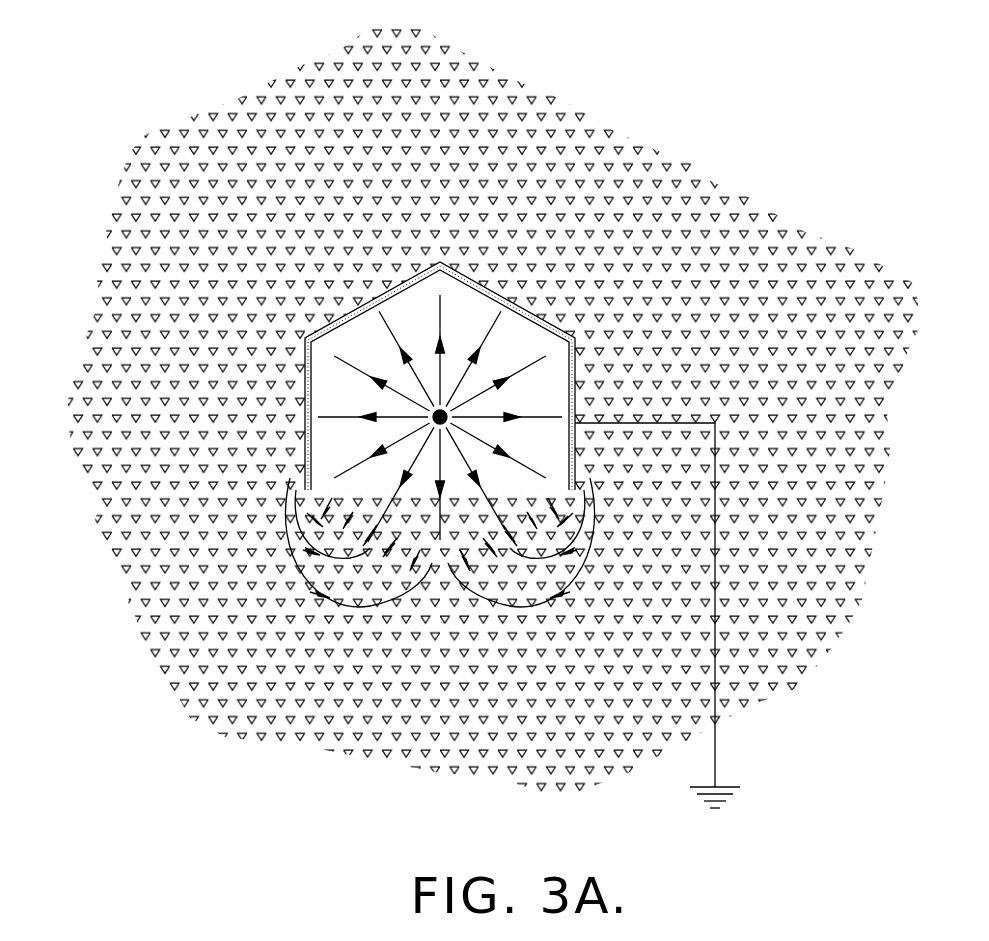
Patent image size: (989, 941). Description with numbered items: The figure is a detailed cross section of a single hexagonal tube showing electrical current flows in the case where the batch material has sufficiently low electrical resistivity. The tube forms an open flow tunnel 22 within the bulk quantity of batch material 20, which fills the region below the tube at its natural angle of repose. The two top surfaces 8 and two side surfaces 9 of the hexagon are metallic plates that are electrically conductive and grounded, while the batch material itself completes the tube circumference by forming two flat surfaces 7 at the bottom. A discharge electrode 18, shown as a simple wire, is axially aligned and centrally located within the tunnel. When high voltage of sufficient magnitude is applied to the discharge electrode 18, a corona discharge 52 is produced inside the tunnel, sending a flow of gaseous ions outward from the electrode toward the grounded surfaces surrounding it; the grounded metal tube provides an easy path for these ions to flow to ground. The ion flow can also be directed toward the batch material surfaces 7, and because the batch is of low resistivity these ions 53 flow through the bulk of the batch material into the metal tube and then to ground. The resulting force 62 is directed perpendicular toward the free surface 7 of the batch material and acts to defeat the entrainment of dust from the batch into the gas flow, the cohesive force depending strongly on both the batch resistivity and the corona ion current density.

The surface 7 is at (343, 527).
The top surfaces 8 is at (388, 293).
The side surfaces 9 is at (575, 395).
The discharge electrode 18 is at (432, 407).
The batch material 20 is at (230, 242).
The flow tunnel 22 is at (372, 350).
The corona discharge 52 is at (508, 378).
The ions 53 is at (310, 553).
The force 62 is at (300, 505).